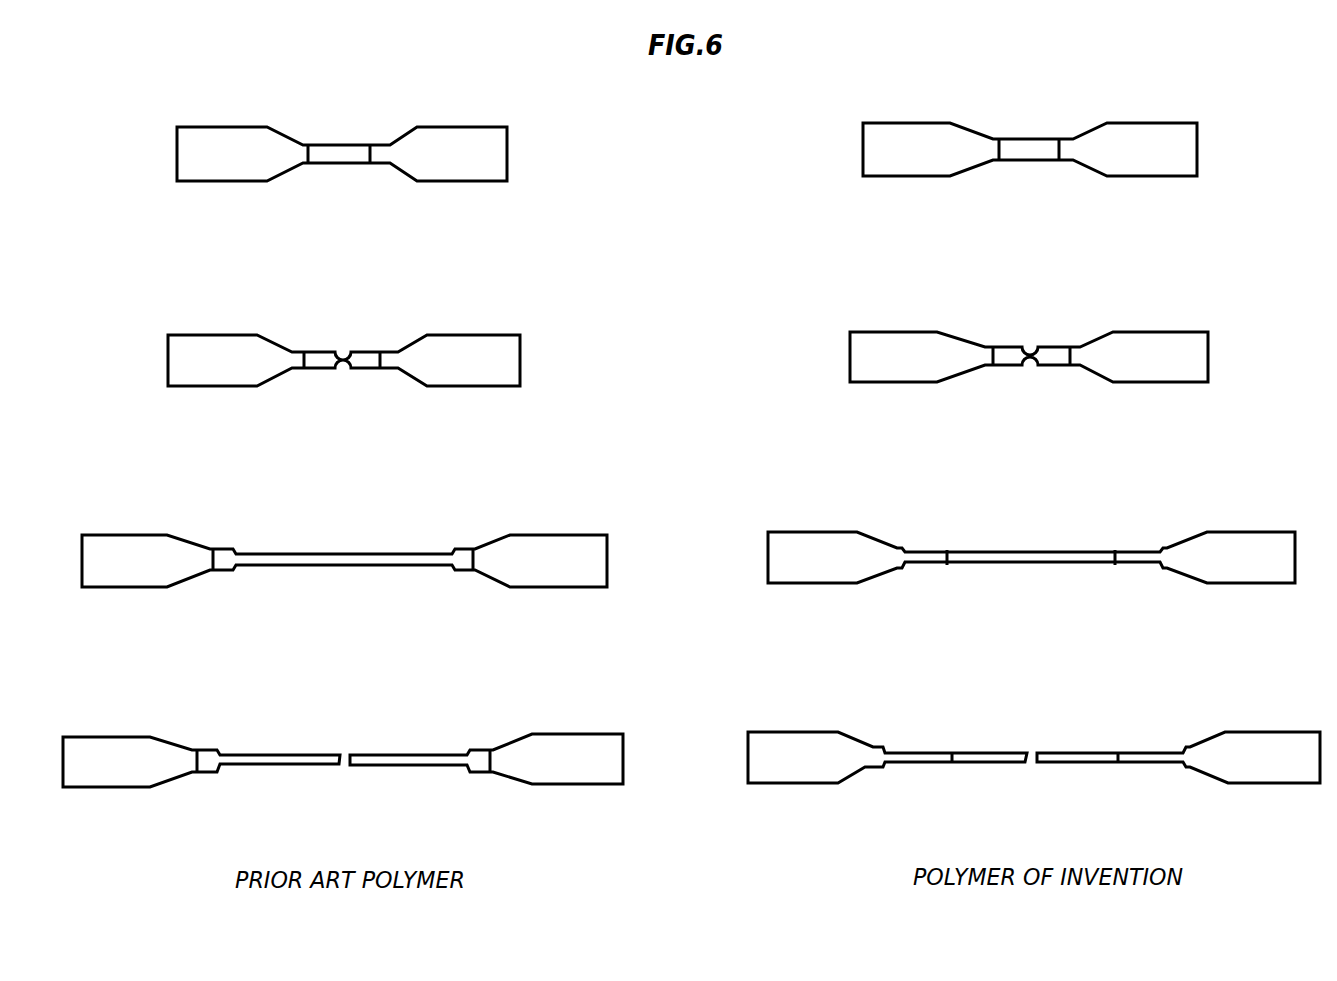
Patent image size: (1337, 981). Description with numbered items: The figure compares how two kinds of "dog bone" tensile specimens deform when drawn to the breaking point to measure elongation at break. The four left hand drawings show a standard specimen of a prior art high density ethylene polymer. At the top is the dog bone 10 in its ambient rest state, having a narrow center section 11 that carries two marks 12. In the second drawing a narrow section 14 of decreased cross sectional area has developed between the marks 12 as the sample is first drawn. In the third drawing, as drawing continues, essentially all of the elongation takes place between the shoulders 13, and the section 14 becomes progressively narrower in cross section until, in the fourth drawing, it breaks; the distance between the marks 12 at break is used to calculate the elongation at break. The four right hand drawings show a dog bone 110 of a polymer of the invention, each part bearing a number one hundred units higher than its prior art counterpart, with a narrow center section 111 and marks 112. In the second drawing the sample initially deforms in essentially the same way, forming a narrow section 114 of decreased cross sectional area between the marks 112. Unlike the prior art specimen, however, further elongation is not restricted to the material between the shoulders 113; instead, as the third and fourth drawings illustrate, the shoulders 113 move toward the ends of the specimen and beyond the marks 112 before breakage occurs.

The dog bone 10 is at (440, 125).
The narrow center section 11 is at (340, 143).
The marks 12 is at (303, 158).
The shoulders 13 is at (335, 370).
The narrow section of decreased cross sectional area 14 is at (343, 350).
The dog bone 110 is at (1190, 152).
The narrow center section 111 is at (1017, 138).
The marks 112 is at (1004, 163).
The shoulders 113 is at (1025, 368).
The narrow section of decreased cross sectional area 114 is at (1030, 348).